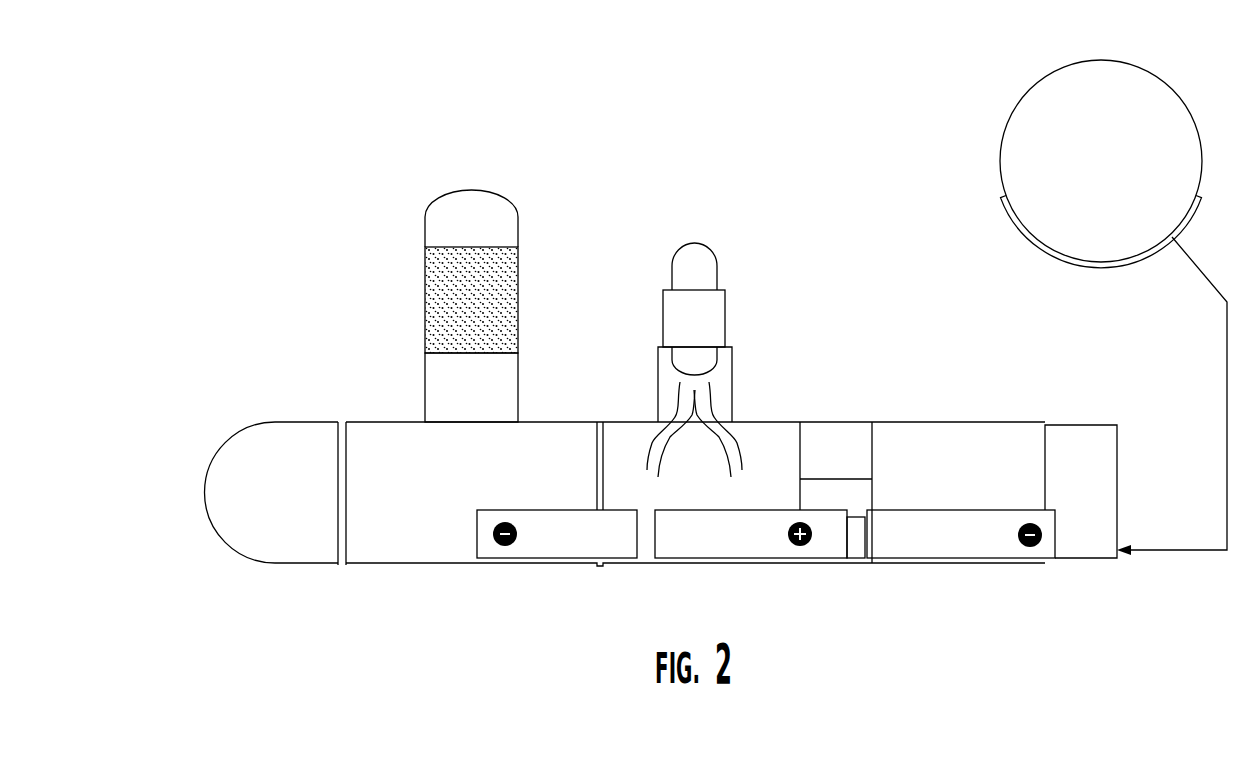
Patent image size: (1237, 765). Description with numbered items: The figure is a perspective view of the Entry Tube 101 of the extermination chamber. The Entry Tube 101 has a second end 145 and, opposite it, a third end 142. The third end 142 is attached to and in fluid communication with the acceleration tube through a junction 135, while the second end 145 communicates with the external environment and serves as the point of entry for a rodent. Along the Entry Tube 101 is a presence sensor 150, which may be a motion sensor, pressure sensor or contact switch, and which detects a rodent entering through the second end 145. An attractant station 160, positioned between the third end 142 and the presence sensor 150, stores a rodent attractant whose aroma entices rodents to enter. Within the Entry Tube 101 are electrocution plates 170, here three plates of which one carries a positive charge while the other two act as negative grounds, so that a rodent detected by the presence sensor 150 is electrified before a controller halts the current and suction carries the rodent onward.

The entry tube 101 is at (202, 306).
The junction 135 is at (304, 421).
The third end 142 is at (350, 565).
The second end 145 is at (1150, 257).
The presence sensor 150 is at (715, 258).
The attractant station 160 is at (519, 212).
The electrocution plates 170 is at (573, 549).